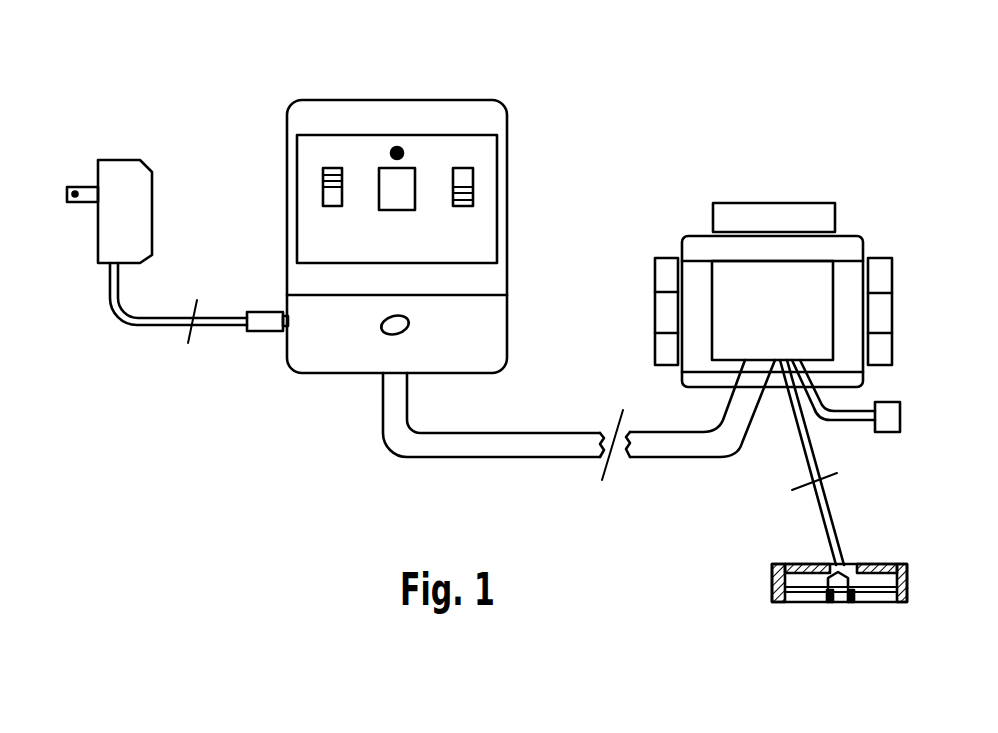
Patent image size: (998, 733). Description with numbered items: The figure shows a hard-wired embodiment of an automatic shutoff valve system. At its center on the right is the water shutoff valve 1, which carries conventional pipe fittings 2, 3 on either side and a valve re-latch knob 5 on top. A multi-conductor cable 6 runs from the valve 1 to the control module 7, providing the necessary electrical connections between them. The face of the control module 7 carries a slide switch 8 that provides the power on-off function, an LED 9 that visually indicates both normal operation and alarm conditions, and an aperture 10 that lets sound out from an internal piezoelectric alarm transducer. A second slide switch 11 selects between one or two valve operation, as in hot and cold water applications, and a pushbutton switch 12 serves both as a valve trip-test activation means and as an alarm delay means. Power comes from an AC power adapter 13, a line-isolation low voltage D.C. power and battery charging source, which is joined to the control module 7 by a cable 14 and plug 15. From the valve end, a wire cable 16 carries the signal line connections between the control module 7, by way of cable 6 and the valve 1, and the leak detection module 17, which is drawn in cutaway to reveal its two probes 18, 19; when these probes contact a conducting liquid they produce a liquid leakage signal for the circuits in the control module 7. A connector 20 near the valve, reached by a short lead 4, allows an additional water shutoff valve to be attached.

The water shutoff valve 1 is at (810, 287).
The pipe fitting 2 is at (892, 312).
The pipe fitting 3 is at (656, 310).
The wire 4 is at (842, 423).
The valve re-latch knob 5 is at (752, 202).
The multi-conductor cable 6 is at (515, 433).
The control module 7 is at (512, 243).
The slide switch 8 is at (462, 175).
The LED 9 is at (396, 150).
The aperture 10 is at (390, 328).
The slide switch 11 is at (330, 168).
The pushbutton switch 12 is at (407, 178).
The AC power adapter 13 is at (148, 225).
The cable 14 is at (155, 322).
The plug 15 is at (268, 312).
The wire cable 16 is at (827, 533).
The leak detection module 17 is at (893, 563).
The probe 18 is at (827, 598).
The probe 19 is at (853, 598).
The connector 20 is at (902, 412).